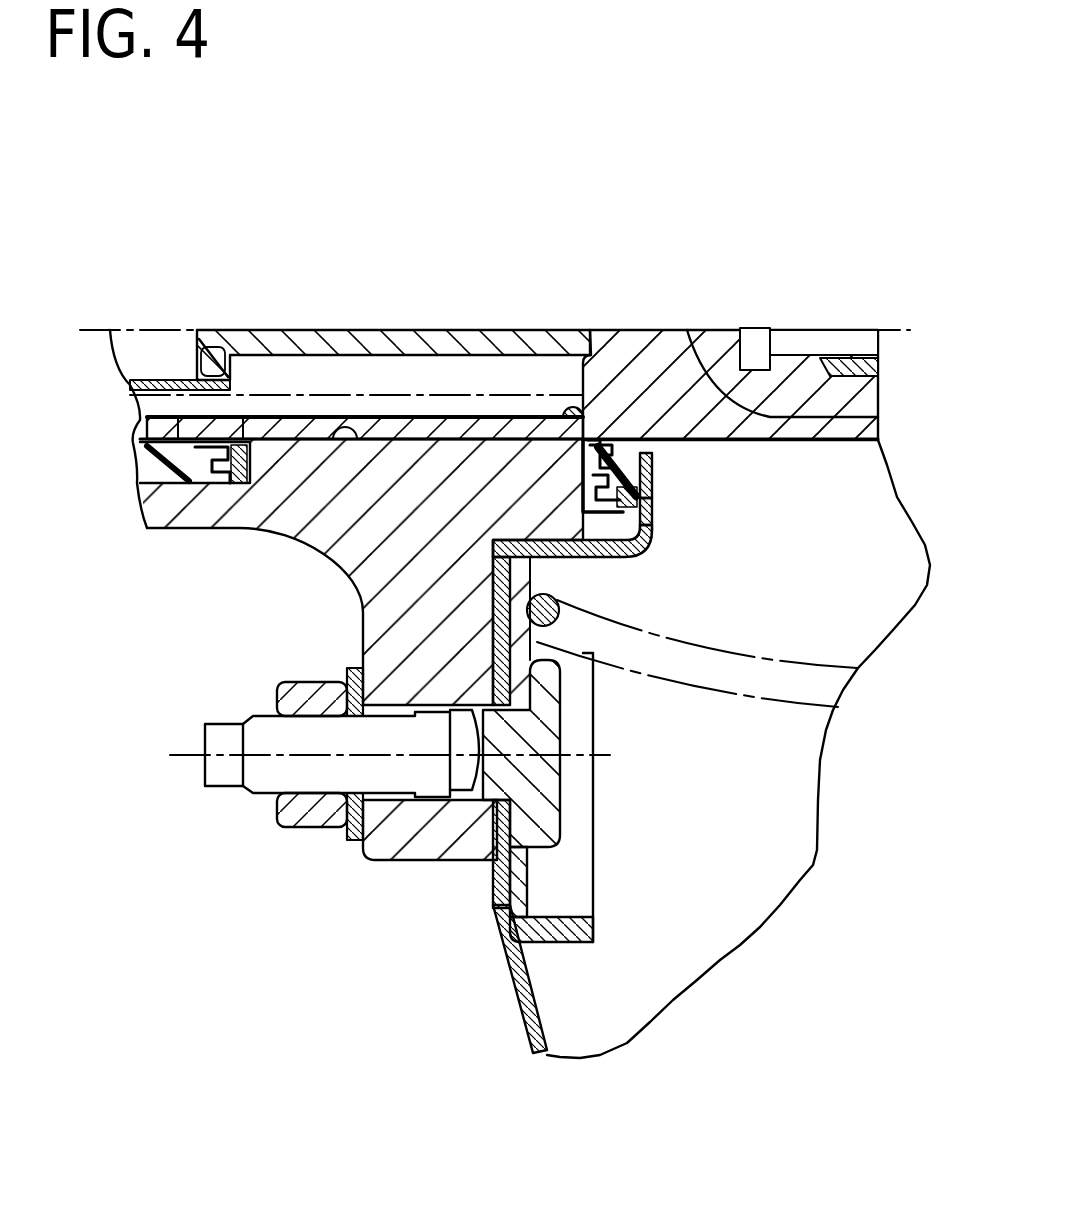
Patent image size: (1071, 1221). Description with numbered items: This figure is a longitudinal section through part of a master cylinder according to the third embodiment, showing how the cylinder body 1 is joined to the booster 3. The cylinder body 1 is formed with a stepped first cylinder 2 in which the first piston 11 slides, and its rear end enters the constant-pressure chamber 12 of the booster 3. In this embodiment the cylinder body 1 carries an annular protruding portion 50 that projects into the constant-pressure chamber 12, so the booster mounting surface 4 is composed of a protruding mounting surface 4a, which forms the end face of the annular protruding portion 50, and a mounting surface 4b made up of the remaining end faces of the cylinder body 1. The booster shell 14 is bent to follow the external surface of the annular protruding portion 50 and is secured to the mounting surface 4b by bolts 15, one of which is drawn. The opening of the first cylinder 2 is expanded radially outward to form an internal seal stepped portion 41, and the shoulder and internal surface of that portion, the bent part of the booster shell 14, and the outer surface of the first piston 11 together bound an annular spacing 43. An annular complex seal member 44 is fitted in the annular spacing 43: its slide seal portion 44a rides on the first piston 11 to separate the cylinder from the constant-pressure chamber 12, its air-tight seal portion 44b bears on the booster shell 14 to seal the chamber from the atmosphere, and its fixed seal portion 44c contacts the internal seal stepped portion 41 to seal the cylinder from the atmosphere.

The cylinder body 1 is at (333, 528).
The first cylinder 2 is at (250, 532).
The booster 3 is at (527, 1033).
The booster mounting surface 4 is at (497, 613).
The protruding mounting surface 4a is at (650, 527).
The mounting surface 4b is at (527, 693).
The first piston 11 is at (710, 390).
The constant-pressure chamber 12 is at (743, 918).
The booster shell 14 is at (507, 948).
The bolts 15 is at (278, 778).
The internal seal stepped portion 41 is at (580, 473).
The annular spacing 43 is at (643, 498).
The annular complex seal member 44 is at (623, 460).
The slide seal portion 44a is at (593, 440).
The air-tight seal portion 44b is at (653, 478).
The fixed seal portion 44c is at (650, 513).
The annular protruding portion 50 is at (512, 490).